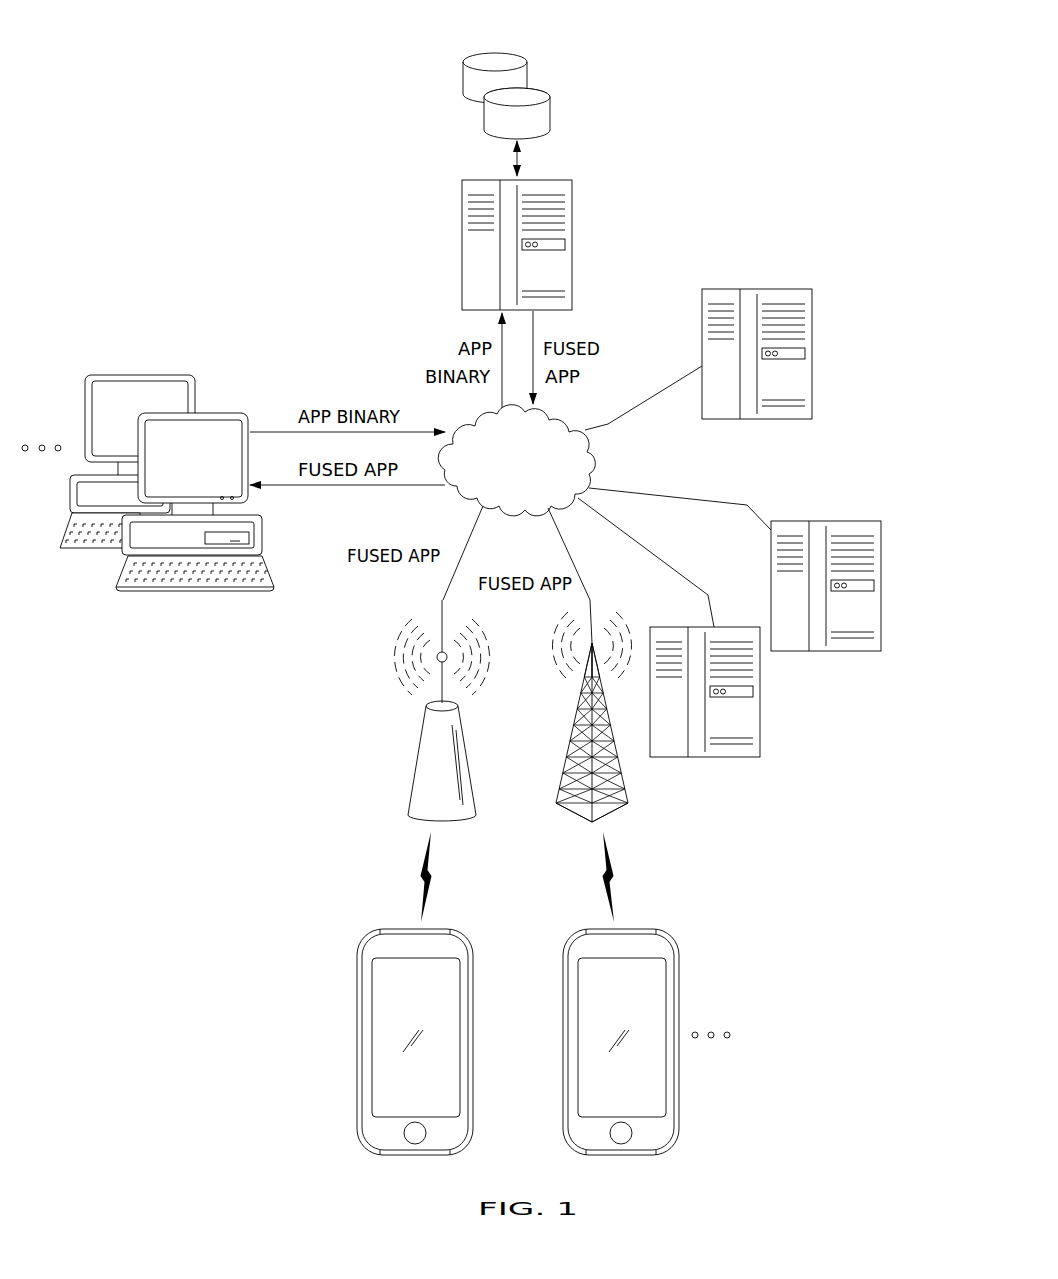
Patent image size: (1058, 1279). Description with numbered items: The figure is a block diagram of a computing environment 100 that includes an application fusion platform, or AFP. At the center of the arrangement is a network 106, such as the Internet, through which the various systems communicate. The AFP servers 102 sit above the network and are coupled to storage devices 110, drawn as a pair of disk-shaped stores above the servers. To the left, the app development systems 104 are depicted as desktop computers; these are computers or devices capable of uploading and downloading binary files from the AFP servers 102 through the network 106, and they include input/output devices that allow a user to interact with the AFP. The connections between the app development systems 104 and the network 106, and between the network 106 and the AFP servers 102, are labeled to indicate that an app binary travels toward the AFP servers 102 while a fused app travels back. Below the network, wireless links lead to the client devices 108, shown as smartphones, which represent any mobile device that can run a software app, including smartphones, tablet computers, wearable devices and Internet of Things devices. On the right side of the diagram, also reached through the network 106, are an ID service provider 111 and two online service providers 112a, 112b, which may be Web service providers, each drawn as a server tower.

The computing environment 100 is at (178, 58).
The AFP servers 102 is at (576, 207).
The app development systems 104 is at (128, 358).
The network 106 is at (586, 456).
The client devices 108 is at (334, 1036).
The storage devices 110 is at (446, 92).
The ID service provider 111 is at (818, 287).
The online service provider 112a is at (843, 492).
The online service provider 112b is at (758, 766).